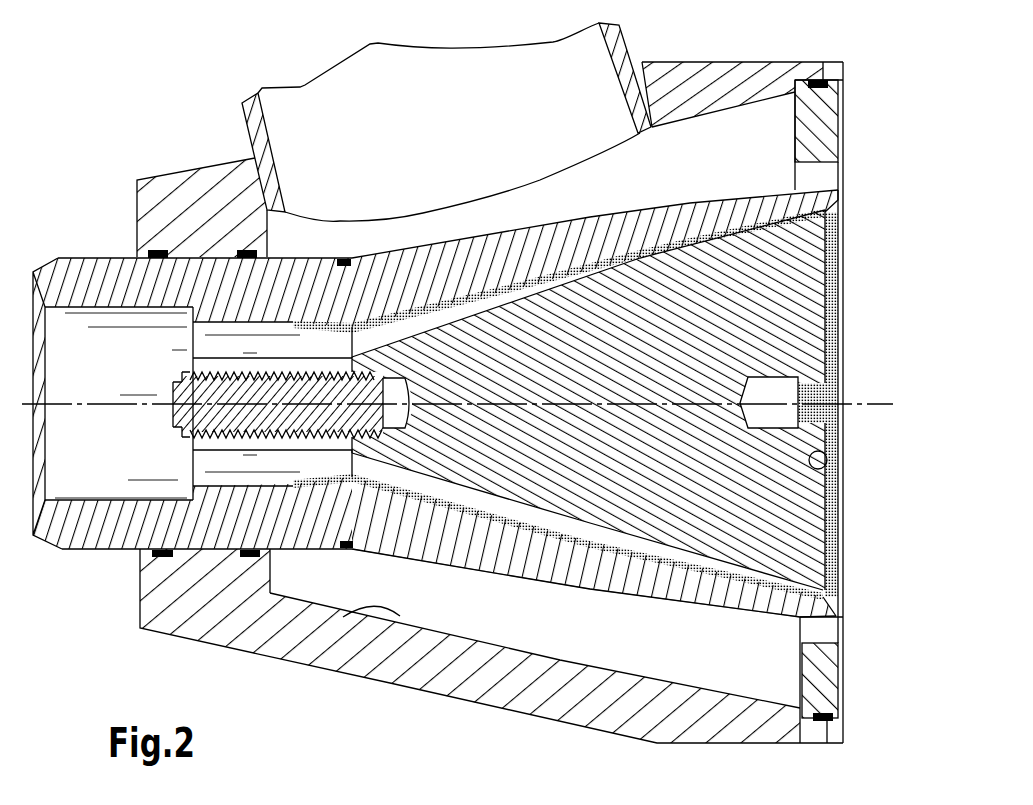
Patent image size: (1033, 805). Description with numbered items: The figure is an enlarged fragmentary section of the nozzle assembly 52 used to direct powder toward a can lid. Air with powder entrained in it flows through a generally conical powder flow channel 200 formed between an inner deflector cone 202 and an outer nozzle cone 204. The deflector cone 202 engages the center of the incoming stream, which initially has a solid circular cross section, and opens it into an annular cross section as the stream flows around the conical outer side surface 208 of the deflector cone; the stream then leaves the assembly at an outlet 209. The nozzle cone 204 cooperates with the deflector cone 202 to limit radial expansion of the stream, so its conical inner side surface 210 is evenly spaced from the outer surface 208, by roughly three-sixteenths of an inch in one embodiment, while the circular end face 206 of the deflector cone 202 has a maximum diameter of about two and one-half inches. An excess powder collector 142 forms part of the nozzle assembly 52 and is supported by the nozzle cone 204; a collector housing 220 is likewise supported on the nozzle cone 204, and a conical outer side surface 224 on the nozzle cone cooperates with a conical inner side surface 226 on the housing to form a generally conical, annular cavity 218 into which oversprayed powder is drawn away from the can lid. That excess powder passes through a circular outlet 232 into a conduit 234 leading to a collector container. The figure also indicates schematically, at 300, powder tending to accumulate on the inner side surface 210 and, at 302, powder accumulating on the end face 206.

The nozzle assembly 52 is at (856, 86).
The excess powder collector 142 is at (686, 58).
The powder flow channel 200 is at (667, 553).
The inner deflector cone 202 is at (797, 268).
The outer nozzle cone 204 is at (718, 190).
The end face 206 is at (823, 472).
The conical outer side surface 208 is at (823, 230).
The outlet 209 is at (823, 598).
The conical inner side surface 210 is at (577, 263).
The conical cavity 218 is at (473, 612).
The collector housing 220 is at (570, 697).
The conical outer side surface 224 is at (680, 604).
The conical inner side surface 226 is at (350, 608).
The circular outlet 232 is at (358, 220).
The conduit 234 is at (260, 132).
The powder accumulation on inner side surface 300 is at (423, 295).
The powder accumulation on end face 302 is at (832, 333).